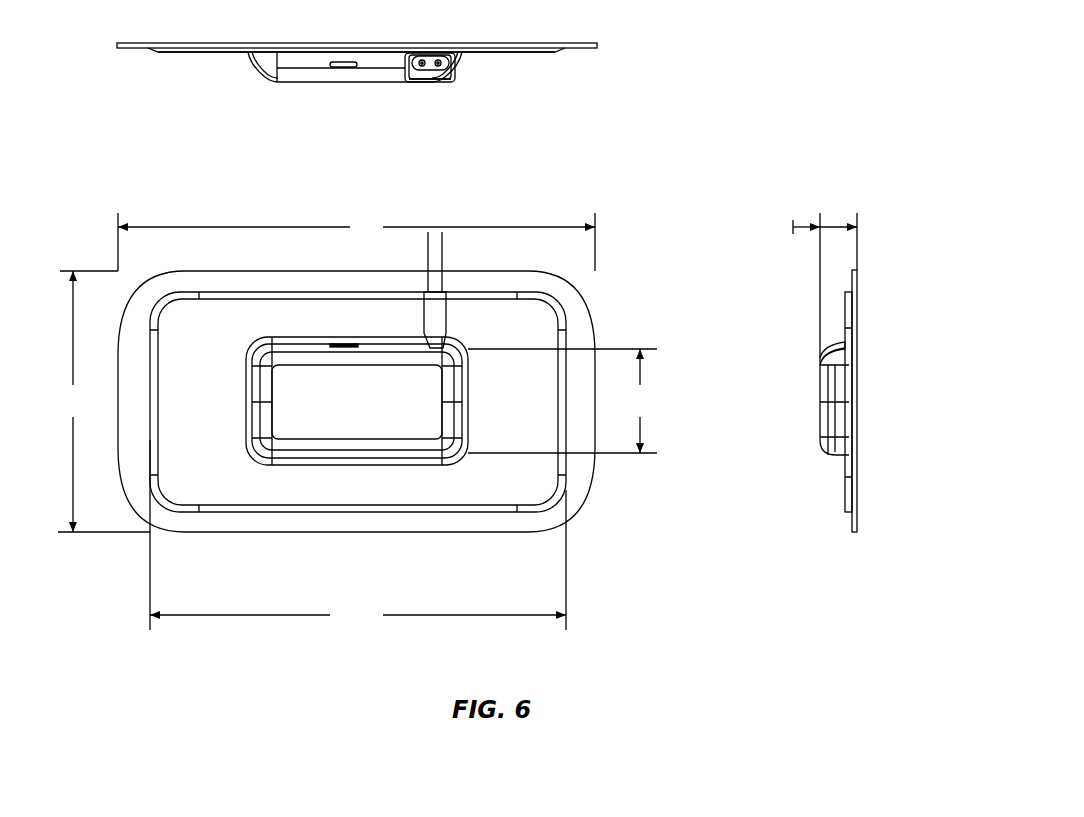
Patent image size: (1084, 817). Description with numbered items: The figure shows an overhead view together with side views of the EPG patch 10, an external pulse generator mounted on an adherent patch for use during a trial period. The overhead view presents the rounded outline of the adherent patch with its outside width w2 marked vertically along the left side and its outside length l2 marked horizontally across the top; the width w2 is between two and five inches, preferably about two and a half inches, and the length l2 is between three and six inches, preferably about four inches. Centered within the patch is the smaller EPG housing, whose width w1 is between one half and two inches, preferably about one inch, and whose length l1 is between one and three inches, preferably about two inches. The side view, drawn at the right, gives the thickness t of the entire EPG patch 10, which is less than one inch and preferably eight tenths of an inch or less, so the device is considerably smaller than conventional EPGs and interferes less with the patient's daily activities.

The EPG patch 10 is at (690, 513).
The length of the EPG l1 is at (358, 535).
The outside length of the patch l2 is at (356, 242).
The width of the EPG w1 is at (562, 401).
The outside width of the patch w2 is at (104, 401).
The thickness of the EPG patch t is at (808, 288).